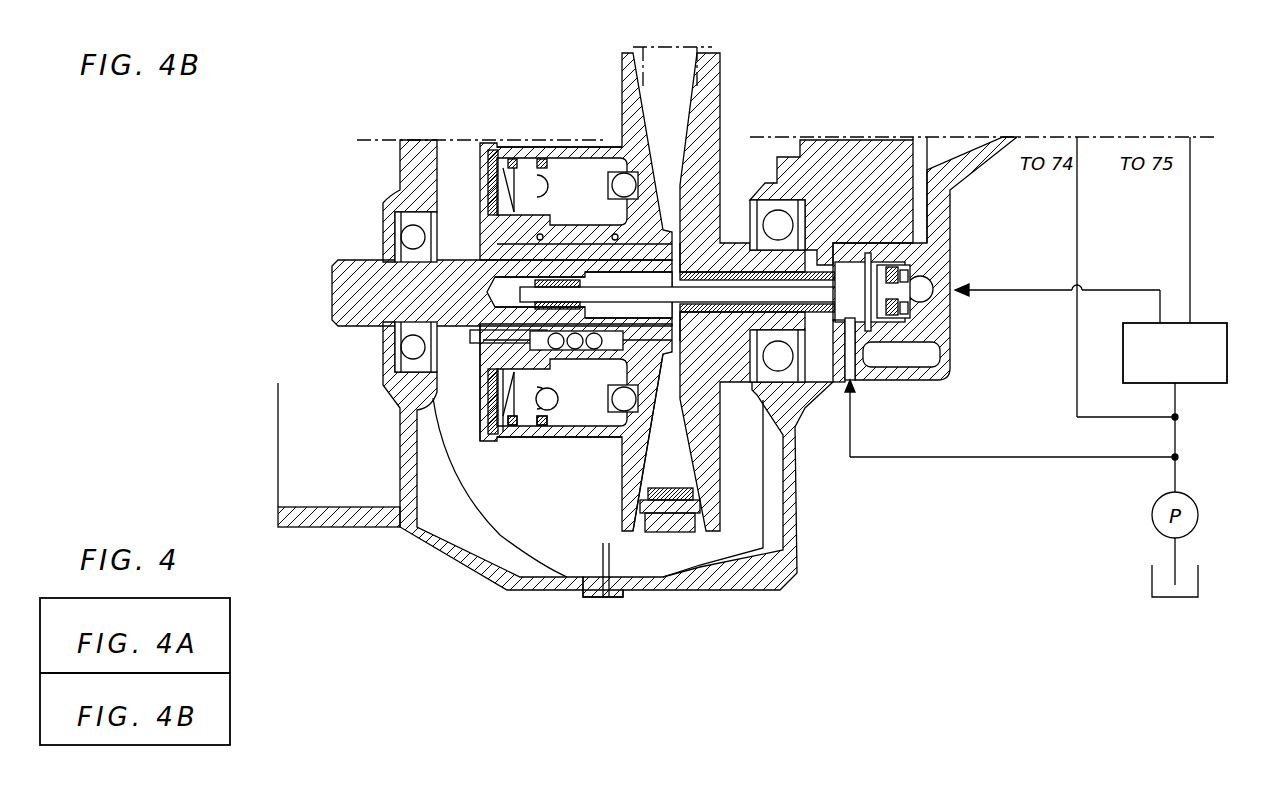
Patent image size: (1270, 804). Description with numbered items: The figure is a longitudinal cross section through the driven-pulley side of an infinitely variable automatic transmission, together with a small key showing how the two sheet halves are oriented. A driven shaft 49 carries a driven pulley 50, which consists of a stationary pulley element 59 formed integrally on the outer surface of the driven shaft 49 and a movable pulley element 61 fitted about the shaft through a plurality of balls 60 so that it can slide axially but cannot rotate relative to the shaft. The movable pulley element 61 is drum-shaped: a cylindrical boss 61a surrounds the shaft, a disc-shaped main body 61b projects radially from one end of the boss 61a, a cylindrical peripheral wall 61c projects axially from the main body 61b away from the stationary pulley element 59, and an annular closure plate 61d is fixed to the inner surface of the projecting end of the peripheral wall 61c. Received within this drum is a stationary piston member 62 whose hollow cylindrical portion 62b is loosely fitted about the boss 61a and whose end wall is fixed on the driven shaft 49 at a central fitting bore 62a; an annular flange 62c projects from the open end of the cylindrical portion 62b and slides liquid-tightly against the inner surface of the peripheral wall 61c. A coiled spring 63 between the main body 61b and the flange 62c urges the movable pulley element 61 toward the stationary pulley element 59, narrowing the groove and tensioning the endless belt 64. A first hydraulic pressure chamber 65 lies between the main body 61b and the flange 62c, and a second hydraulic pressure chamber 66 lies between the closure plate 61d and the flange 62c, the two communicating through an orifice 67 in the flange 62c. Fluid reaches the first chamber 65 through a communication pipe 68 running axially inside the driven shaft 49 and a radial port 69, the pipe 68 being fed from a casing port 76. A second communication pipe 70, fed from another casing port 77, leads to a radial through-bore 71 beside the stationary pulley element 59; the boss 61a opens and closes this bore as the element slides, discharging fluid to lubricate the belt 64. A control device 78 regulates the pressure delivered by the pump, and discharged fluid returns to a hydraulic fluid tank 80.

The driven shaft 49 is at (340, 298).
The driven pulley 50 is at (637, 72).
The stationary pulley element 59 is at (716, 172).
The balls 60 is at (590, 350).
The movable pulley element 61 is at (617, 446).
The cylindrical boss 61a is at (600, 230).
The disc-shaped main body 61b is at (633, 150).
The cylindrical peripheral wall 61c is at (517, 145).
The annular closure plate 61d is at (510, 187).
The stationary piston member 62 is at (500, 378).
The central fitting bore 62a is at (395, 345).
The hollow cylindrical portion 62b is at (517, 437).
The annular flange 62c is at (547, 437).
The coiled spring 63 is at (560, 395).
The endless belt 64 is at (668, 532).
The first hydraulic pressure chamber 65 is at (656, 442).
The second hydraulic pressure chamber 66 is at (523, 430).
The orifice 67 is at (540, 200).
The communication pipe 68 is at (523, 278).
The radial port 69 is at (500, 316).
The communication pipe 70 is at (690, 312).
The radial through-bore 71 is at (716, 257).
The port 76 is at (950, 273).
The port 77 is at (863, 382).
The control device 78 is at (1170, 330).
The hydraulic fluid tank 80 is at (1150, 585).